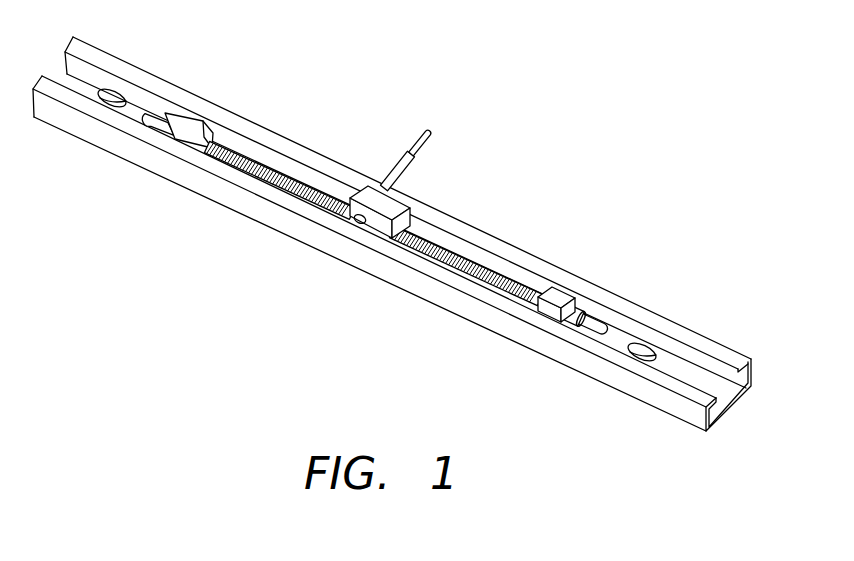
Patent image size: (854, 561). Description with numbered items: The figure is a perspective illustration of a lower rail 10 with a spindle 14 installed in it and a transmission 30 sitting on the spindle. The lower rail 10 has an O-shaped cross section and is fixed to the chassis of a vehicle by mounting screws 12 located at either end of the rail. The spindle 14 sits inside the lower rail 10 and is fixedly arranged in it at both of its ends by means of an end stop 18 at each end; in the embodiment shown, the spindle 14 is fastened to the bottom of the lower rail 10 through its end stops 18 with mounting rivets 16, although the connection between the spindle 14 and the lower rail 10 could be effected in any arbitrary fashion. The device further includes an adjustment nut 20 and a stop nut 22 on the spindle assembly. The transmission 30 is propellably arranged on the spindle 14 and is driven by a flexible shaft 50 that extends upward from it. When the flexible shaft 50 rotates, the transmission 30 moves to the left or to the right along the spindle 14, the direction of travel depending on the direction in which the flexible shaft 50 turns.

The lower rail 10 is at (235, 206).
The mounting screws 12 is at (103, 97).
The spindle 14 is at (383, 193).
The mounting rivets 16 is at (163, 108).
The end stop 18 is at (212, 138).
The adjustment nut 20 is at (177, 129).
The stop nut 22 is at (568, 307).
The transmission 30 is at (358, 214).
The flexible shaft 50 is at (415, 158).